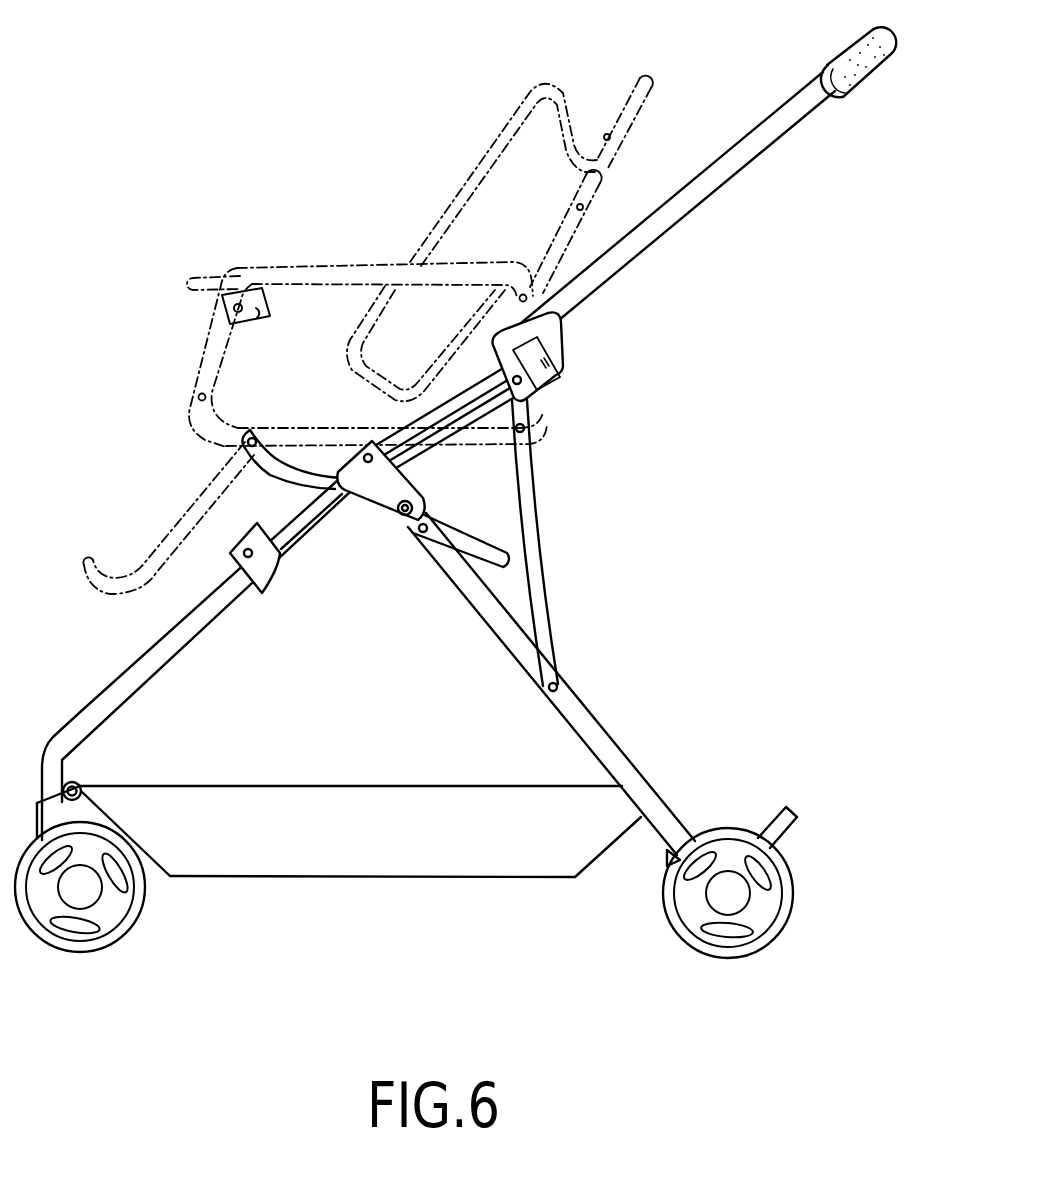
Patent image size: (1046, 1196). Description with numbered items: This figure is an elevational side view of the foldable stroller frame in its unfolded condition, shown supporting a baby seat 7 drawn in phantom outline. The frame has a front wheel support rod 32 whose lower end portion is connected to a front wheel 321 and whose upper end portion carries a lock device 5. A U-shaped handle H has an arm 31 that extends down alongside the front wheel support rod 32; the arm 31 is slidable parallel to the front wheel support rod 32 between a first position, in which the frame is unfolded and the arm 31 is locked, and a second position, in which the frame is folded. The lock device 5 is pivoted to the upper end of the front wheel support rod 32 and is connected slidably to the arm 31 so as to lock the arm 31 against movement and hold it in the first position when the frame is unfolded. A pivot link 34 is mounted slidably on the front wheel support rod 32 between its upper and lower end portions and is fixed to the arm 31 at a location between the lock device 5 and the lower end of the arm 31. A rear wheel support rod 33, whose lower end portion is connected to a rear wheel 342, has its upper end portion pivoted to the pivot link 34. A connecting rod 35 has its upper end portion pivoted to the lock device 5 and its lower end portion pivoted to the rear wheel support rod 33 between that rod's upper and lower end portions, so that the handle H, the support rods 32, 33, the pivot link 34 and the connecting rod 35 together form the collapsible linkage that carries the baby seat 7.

The lock device 5 is at (561, 337).
The baby seat 7 is at (283, 266).
The arm 31 is at (702, 199).
The front wheel support rod 32 is at (227, 620).
The rear wheel support rod 33 is at (483, 607).
The pivot link 34 is at (372, 483).
The connecting rod 35 is at (527, 513).
The front wheel 321 is at (100, 945).
The rear wheel 342 is at (720, 955).
The U-shaped handle H is at (803, 70).